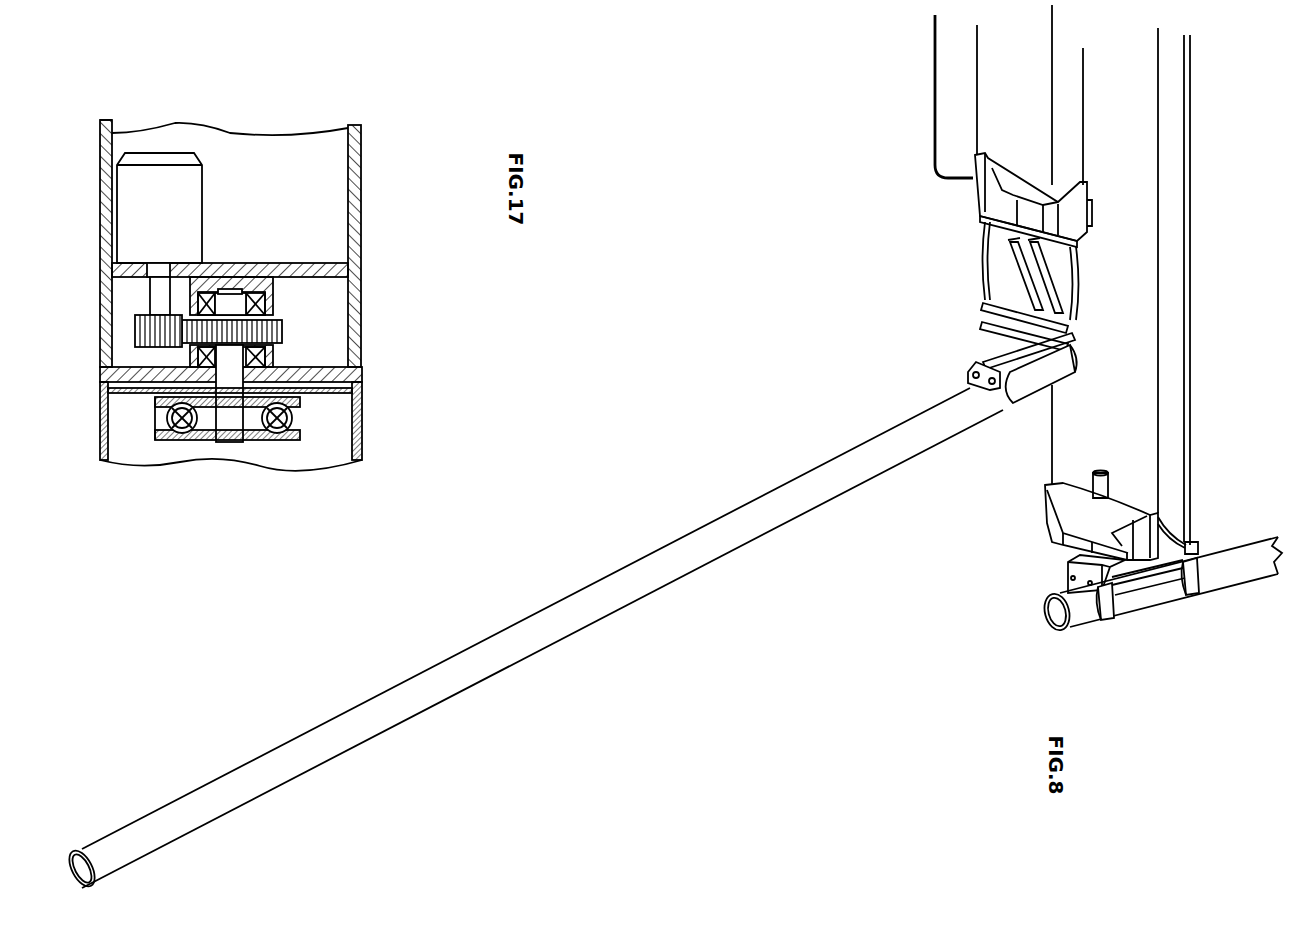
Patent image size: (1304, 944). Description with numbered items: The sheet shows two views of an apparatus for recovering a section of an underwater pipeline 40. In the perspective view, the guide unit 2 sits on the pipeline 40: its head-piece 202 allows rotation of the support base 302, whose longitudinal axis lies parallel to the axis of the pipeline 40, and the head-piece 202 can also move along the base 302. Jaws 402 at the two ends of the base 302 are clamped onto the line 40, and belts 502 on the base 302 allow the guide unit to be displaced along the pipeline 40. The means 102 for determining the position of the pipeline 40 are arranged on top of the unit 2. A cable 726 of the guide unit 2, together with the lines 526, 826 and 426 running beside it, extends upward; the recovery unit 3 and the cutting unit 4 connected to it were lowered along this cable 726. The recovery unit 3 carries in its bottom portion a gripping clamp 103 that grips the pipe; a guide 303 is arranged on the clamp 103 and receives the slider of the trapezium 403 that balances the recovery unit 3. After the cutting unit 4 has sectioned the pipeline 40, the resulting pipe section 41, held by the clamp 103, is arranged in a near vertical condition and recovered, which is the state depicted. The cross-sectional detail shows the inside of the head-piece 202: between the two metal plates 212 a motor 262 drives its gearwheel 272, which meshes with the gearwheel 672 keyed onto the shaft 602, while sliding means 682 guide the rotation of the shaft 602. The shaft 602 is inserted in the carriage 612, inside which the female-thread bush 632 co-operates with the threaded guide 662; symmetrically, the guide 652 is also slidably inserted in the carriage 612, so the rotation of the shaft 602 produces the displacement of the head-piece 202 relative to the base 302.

In FIG. 17, the head-piece 202 is at (363, 128).
In FIG. 8, the head-piece 202 is at (1040, 513).
In FIG. 17, the metal plates 212 is at (100, 153).
In FIG. 17, the motor 262 is at (200, 188).
In FIG. 17, the sliding means 682 is at (265, 306).
In FIG. 17, the gearwheel 672 is at (277, 333).
In FIG. 17, the gearwheel of a motor 272 is at (135, 330).
In FIG. 17, the support base 302 is at (100, 430).
In FIG. 8, the support base 302 is at (1066, 578).
In FIG. 17, the female-thread bush 632 is at (292, 418).
In FIG. 17, the carriage 612 is at (163, 404).
In FIG. 17, the guide 652 is at (183, 440).
In FIG. 17, the threaded guide 662 is at (283, 440).
In FIG. 17, the shaft 602 is at (232, 442).
In FIG. 8, the cable 526 is at (934, 92).
In FIG. 8, the cable 826 is at (1085, 92).
In FIG. 8, the cable 726 is at (1161, 452).
In FIG. 8, the rod 426 is at (1192, 491).
In FIG. 8, the recovery unit 3 is at (970, 193).
In FIG. 8, the cutting unit 4 is at (1084, 323).
In FIG. 8, the trapezium 403 is at (1060, 323).
In FIG. 8, the guide 303 is at (985, 362).
In FIG. 8, the gripping clamp 103 is at (970, 378).
In FIG. 8, the means for determining the position of the pipeline 102 is at (1101, 470).
In FIG. 8, the guide unit 2 is at (1064, 523).
In FIG. 8, the underwater pipeline 40 is at (1237, 576).
In FIG. 8, the pipe section 41 is at (487, 642).
In FIG. 8, the jaws 402 is at (1105, 620).
In FIG. 8, the belts 502 is at (1129, 600).